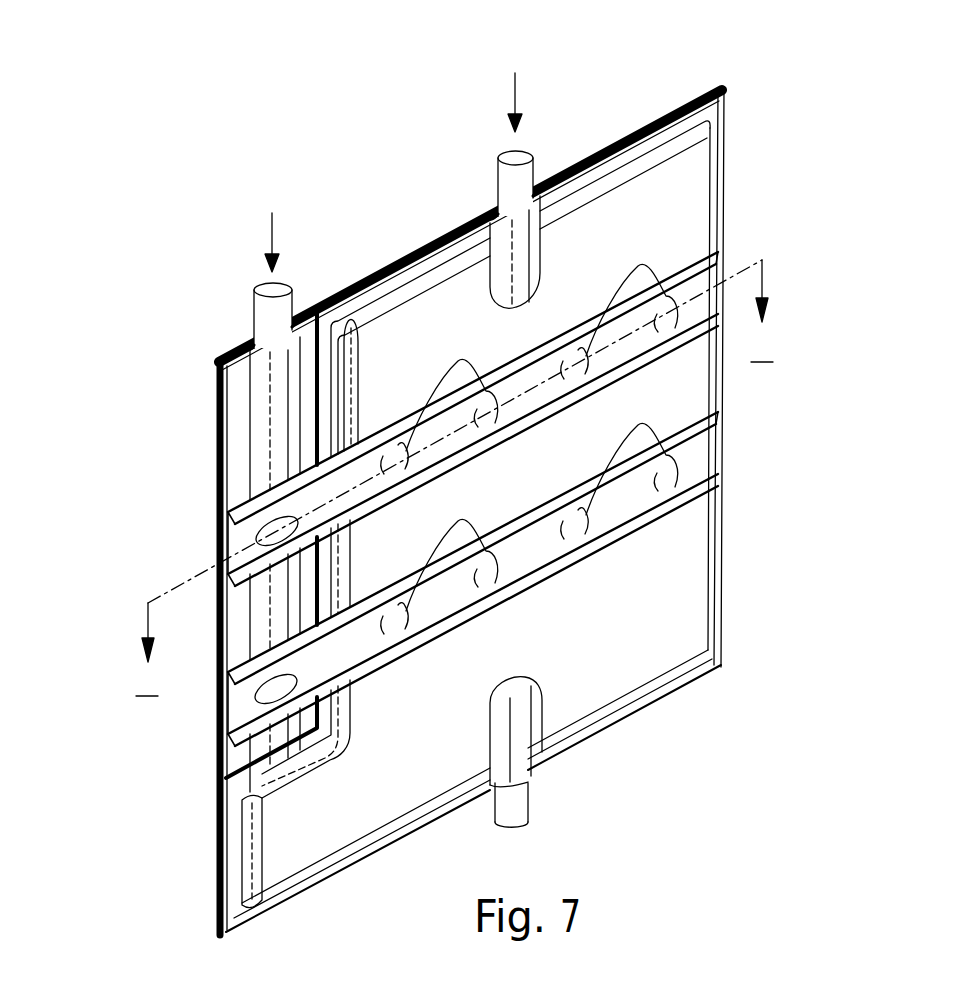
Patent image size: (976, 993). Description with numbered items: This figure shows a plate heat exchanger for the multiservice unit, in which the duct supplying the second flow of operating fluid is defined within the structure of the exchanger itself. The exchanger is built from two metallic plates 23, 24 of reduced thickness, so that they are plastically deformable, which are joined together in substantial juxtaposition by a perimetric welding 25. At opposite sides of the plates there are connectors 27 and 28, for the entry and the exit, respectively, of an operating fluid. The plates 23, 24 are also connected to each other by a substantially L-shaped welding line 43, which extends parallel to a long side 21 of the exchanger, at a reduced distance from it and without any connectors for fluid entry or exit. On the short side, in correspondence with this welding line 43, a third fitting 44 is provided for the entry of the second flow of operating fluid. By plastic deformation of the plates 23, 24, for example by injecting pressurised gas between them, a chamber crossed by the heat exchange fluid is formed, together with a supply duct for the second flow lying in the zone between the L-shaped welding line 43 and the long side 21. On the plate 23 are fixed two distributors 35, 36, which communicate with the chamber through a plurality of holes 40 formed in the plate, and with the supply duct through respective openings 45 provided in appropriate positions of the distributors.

The long side 21 is at (210, 703).
The metallic plate 23 is at (380, 272).
The metallic plate 24 is at (604, 170).
The perimetric welding 25 is at (653, 124).
The connector 27 is at (533, 150).
The connector 28 is at (530, 801).
The distributor 35 is at (512, 408).
The distributor 36 is at (518, 565).
The holes 40 is at (529, 434).
The L-shaped welding line 43 is at (331, 358).
The third fitting 44 is at (254, 312).
The openings 45 is at (293, 512).